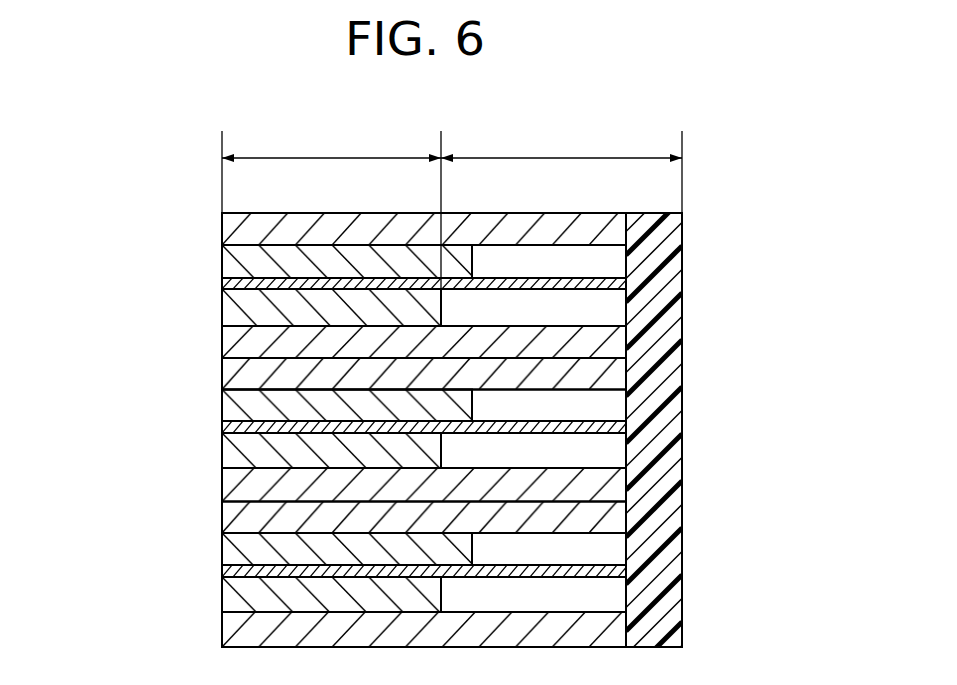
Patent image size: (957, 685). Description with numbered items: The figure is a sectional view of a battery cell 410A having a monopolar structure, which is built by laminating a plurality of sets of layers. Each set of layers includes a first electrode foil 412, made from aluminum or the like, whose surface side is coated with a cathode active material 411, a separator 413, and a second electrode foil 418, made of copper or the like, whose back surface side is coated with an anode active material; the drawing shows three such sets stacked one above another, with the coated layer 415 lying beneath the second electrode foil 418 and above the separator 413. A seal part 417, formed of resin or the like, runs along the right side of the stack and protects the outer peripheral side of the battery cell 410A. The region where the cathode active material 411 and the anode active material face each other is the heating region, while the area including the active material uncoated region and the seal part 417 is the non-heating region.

The battery cell 410A is at (664, 116).
The second electrode foil 418 is at (222, 231).
The electrode layer 415 is at (222, 262).
The separator 413 is at (222, 283).
The cathode active material 411 is at (222, 313).
The first electrode foil 412 is at (222, 345).
The seal part 417 is at (660, 328).